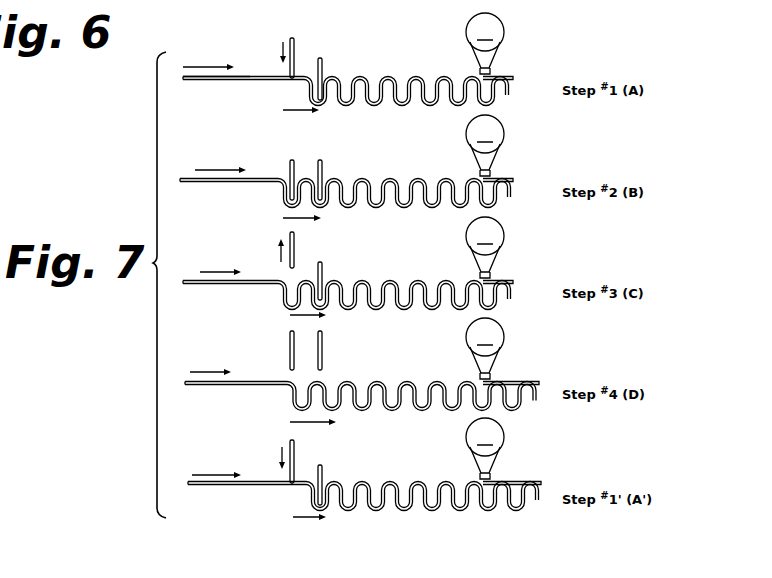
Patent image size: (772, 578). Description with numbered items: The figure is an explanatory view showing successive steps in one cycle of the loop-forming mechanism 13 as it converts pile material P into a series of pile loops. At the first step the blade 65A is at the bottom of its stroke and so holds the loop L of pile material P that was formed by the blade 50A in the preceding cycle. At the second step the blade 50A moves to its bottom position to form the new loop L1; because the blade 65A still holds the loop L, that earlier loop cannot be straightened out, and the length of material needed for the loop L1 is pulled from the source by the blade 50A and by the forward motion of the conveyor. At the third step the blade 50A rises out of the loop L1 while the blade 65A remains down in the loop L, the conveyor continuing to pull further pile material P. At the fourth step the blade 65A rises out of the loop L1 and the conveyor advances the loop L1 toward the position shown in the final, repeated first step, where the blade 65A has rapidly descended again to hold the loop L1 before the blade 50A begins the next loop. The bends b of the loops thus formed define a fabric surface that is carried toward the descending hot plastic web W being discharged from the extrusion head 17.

The loop-forming mechanism 13 is at (279, 19).
The blade 50A is at (290, 352).
The blade 65A is at (322, 473).
The pile material P is at (247, 76).
The loop L is at (354, 507).
The loop L1 is at (322, 510).
The hot plastic web W is at (521, 482).
The extrusion head 17 is at (485, 246).
The bend b is at (421, 484).